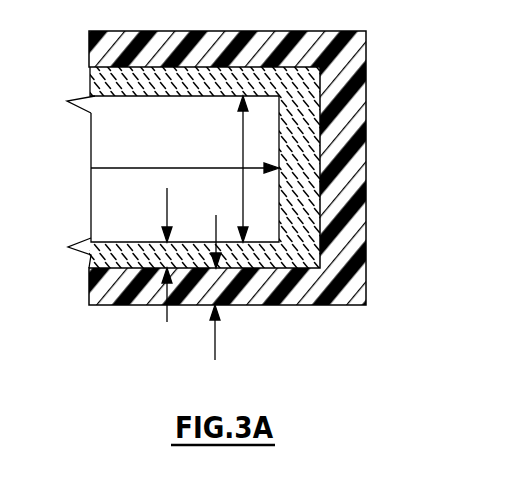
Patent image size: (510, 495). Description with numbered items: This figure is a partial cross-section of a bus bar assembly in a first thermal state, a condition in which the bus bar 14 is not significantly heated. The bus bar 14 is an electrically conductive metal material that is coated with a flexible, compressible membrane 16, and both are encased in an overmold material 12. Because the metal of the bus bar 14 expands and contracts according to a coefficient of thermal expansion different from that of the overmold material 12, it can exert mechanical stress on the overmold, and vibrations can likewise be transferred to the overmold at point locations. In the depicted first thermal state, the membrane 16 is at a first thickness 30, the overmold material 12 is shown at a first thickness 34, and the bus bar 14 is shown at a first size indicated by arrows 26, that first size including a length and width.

The overmold material 12 is at (355, 108).
The bus bar 14 is at (143, 108).
The flexible, compressible membrane 16 is at (302, 221).
The arrows indicating first size 26 is at (243, 137).
The first thickness of membrane 30 is at (167, 322).
The first thickness of overmold 34 is at (215, 332).